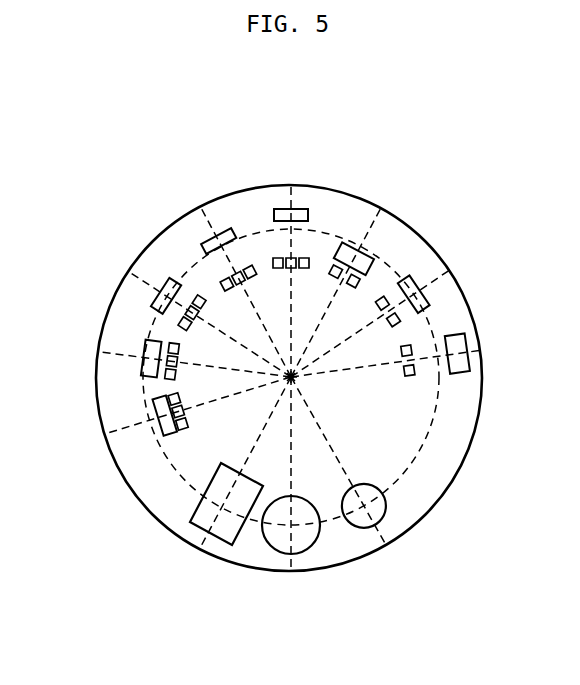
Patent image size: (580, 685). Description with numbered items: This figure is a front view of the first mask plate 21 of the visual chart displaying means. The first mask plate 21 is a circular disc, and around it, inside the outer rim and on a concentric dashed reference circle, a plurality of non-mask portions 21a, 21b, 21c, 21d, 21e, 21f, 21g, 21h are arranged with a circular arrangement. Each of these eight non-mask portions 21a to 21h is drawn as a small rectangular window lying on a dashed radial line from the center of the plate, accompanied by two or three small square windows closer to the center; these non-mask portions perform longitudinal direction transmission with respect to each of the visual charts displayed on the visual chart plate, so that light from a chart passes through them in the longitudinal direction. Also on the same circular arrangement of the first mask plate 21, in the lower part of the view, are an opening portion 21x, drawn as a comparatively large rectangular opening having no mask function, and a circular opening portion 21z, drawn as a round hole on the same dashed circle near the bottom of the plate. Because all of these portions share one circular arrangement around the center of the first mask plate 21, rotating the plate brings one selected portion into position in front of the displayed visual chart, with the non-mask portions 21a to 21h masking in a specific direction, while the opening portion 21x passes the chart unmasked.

The first mask plate 21 is at (401, 221).
The non-mask portion 21a is at (458, 334).
The non-mask portion 21b is at (418, 278).
The non-mask portion 21c is at (344, 243).
The non-mask portion 21d is at (304, 209).
The non-mask portion 21e is at (228, 232).
The non-mask portion 21f is at (172, 281).
The non-mask portion 21g is at (146, 344).
The non-mask portion 21h is at (155, 433).
The opening portion 21x is at (241, 537).
The circular opening portion 21z is at (318, 543).